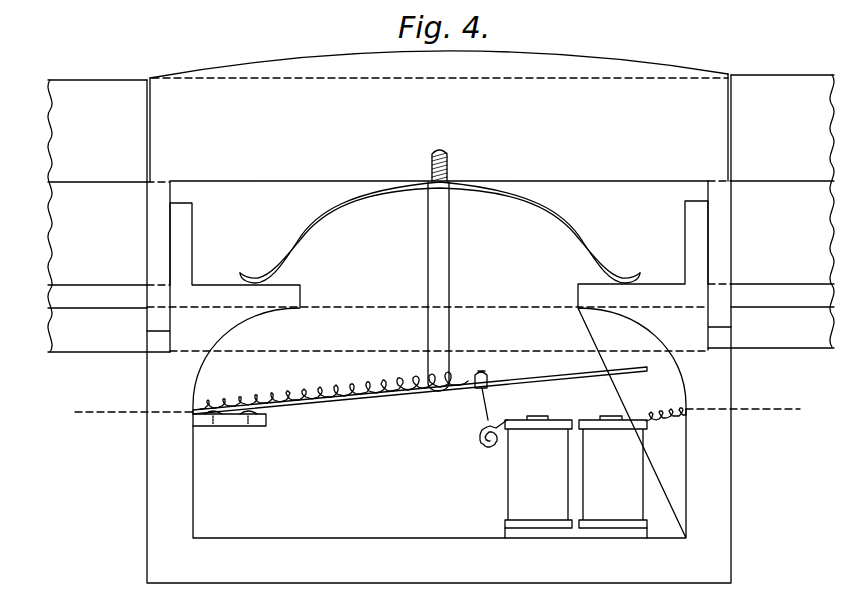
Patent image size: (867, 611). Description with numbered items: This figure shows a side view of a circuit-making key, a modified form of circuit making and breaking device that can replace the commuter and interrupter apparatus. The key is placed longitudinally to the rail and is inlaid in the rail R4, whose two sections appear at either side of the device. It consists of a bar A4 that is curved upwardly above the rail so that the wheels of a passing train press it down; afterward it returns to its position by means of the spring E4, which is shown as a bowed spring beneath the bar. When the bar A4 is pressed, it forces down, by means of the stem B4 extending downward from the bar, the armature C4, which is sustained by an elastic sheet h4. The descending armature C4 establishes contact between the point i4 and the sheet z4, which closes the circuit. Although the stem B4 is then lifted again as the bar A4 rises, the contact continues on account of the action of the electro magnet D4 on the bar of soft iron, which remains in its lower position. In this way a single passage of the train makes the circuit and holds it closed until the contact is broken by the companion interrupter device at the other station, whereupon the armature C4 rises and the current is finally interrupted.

The rail R4 is at (441, 213).
The bar A4 is at (439, 116).
The spring E4 is at (440, 232).
The stem B4 is at (438, 270).
The armature C4 is at (420, 381).
The elastic sheet h4 is at (334, 402).
The point i4 is at (475, 398).
The sheet z4 is at (485, 441).
The electro magnet D4 is at (576, 477).